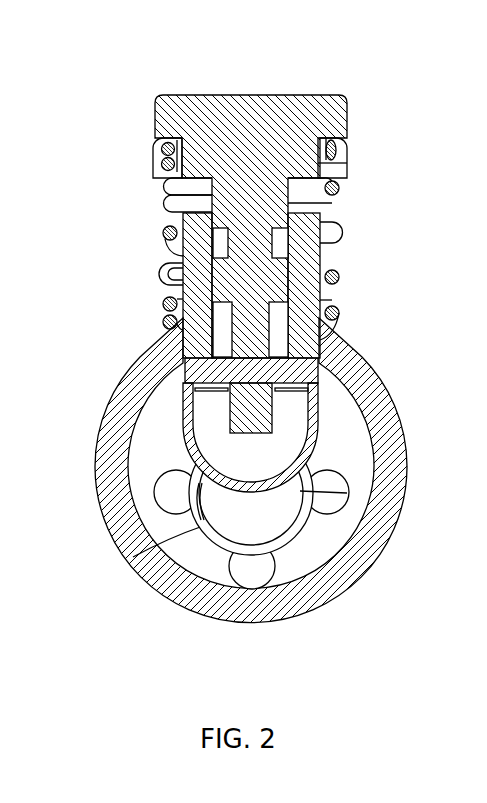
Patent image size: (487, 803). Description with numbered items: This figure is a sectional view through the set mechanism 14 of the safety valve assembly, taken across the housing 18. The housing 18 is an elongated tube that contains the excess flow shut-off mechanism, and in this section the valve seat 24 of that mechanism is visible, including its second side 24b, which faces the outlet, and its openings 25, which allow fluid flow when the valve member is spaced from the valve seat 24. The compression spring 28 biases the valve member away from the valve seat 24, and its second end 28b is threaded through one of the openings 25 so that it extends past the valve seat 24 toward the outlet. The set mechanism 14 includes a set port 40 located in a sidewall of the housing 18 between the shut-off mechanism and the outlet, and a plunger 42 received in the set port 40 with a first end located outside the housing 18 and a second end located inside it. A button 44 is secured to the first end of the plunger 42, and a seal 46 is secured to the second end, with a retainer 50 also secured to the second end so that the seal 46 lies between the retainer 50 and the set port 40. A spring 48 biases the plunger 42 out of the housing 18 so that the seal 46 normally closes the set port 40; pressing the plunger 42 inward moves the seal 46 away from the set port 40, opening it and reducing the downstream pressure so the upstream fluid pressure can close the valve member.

The set mechanism 14 is at (368, 134).
The housing 18 is at (349, 597).
The valve seat 24 is at (143, 462).
The second side 24b is at (328, 552).
The openings 25 is at (178, 470).
The compression spring 28 is at (136, 562).
The second end 28b is at (200, 492).
The set port 40 is at (297, 240).
The plunger 42 is at (240, 243).
The button 44 is at (157, 116).
The seal 46 is at (320, 362).
The spring 48 is at (345, 150).
The retainer 50 is at (320, 425).